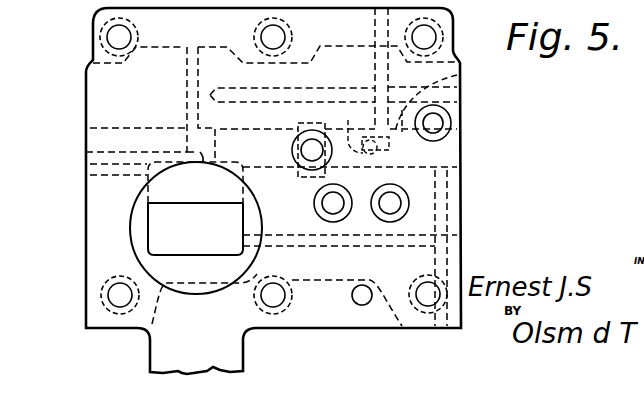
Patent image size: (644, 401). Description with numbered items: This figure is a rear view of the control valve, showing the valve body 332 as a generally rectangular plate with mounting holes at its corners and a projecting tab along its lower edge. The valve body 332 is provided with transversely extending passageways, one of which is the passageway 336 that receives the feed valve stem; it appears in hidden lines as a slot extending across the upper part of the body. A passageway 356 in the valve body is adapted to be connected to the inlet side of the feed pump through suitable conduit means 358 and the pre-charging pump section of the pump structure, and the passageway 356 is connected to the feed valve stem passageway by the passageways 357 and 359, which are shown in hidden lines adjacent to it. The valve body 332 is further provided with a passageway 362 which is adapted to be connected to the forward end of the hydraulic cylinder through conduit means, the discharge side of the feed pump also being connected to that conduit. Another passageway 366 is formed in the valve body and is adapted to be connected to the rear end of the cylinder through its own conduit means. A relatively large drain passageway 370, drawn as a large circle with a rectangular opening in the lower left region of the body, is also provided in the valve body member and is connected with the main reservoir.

The valve body 332 is at (85, 85).
The transversely extending passageway 336 is at (254, 112).
The passageway 356 is at (442, 123).
The passageway 357 is at (462, 73).
The conduit means 358 is at (348, 217).
The passageway 359 is at (359, 130).
The passageway 362 is at (323, 153).
The passageway 366 is at (410, 203).
The drain passageway 370 is at (165, 222).